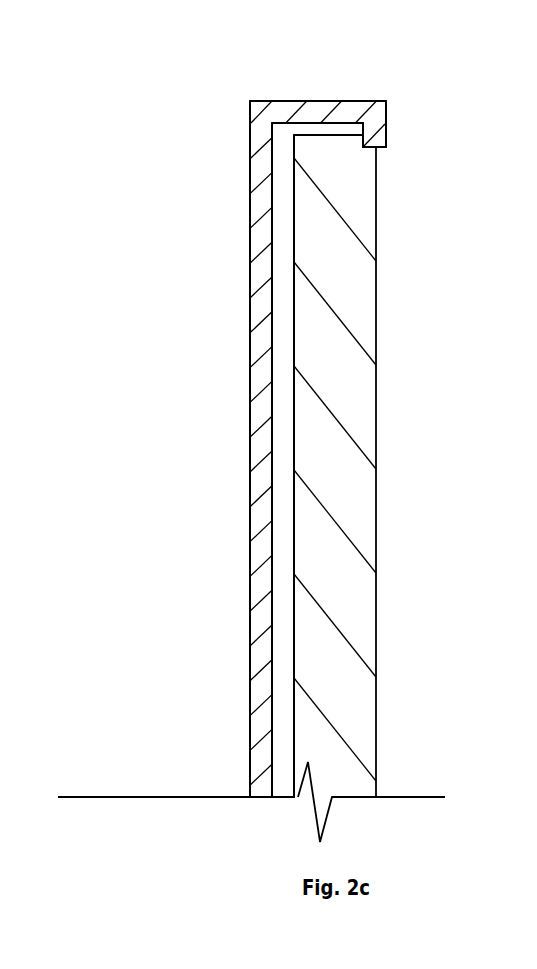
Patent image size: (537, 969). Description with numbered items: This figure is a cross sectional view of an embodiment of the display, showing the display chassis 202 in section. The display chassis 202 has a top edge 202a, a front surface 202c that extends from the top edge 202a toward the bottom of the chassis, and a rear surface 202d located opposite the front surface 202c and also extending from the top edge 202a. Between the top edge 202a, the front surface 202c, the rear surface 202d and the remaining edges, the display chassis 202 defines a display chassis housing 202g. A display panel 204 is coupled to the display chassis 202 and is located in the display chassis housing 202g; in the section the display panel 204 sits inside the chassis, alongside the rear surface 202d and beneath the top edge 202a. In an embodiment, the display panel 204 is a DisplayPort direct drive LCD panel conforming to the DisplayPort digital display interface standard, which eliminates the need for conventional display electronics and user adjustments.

The display chassis 202 is at (250, 100).
The top edge 202a is at (317, 100).
The front surface 202c is at (386, 123).
The rear surface 202d is at (250, 437).
The display chassis housing 202g is at (280, 318).
The display panel 204 is at (353, 598).